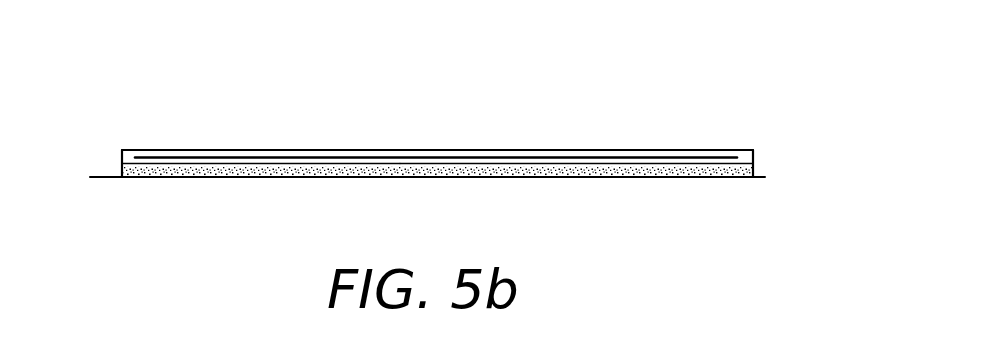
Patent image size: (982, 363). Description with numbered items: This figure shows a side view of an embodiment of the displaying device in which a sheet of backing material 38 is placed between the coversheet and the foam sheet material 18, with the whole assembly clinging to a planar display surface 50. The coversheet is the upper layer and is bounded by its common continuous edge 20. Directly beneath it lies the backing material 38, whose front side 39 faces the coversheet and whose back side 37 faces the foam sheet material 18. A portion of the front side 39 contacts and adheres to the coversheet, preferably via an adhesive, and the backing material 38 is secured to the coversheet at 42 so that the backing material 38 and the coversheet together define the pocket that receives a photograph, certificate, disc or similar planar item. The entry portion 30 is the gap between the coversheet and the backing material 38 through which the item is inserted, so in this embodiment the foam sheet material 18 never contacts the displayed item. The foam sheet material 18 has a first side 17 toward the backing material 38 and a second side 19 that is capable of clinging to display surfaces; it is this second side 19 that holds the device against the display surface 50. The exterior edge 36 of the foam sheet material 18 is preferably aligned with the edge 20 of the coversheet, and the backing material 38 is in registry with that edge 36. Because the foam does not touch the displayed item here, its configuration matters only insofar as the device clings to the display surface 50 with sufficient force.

The first side 17 is at (213, 165).
The foam sheet material 18 is at (622, 166).
The second side 19 is at (225, 178).
The continuous edge 20 is at (753, 150).
The entry portion 30 is at (525, 158).
The exterior edge 36 is at (755, 169).
The back side 37 is at (397, 177).
The backing material 38 is at (467, 165).
The front side 39 is at (302, 157).
The securing location 42 is at (121, 150).
The display surface 50 is at (103, 178).